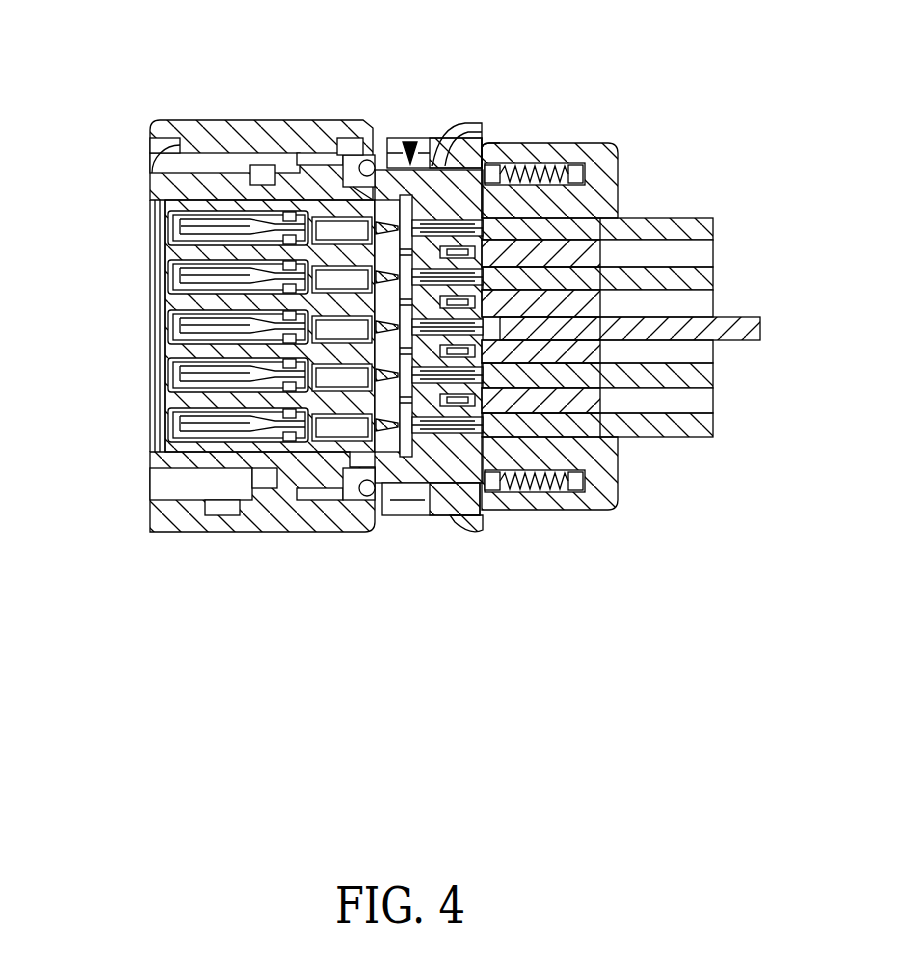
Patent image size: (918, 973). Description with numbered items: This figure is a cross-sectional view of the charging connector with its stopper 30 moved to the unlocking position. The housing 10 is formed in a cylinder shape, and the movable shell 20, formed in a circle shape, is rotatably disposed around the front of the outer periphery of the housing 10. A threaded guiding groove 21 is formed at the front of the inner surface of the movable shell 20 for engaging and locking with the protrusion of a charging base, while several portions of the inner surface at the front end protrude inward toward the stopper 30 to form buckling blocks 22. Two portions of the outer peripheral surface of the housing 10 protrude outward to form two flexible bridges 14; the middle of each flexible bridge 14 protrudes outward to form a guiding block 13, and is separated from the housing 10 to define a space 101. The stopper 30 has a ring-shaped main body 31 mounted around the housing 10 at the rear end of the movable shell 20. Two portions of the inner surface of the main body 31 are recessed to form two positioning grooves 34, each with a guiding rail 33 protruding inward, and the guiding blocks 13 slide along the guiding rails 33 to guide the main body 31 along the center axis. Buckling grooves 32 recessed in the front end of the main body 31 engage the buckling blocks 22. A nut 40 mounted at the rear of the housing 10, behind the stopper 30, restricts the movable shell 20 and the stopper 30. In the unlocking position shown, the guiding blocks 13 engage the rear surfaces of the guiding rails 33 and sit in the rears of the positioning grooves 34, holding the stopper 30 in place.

The housing 10 is at (167, 190).
The guiding block 13 is at (430, 153).
The flexible bridge 14 is at (410, 142).
The space 101 is at (482, 148).
The movable shell 20 is at (152, 527).
The threaded guiding groove 21 is at (151, 143).
The buckling block 22 is at (355, 150).
The stopper 30 is at (407, 517).
The main body 31 is at (388, 513).
The buckling groove 32 is at (387, 147).
The guiding rail 33 is at (458, 515).
The positioning groove 34 is at (485, 505).
The nut 40 is at (607, 172).